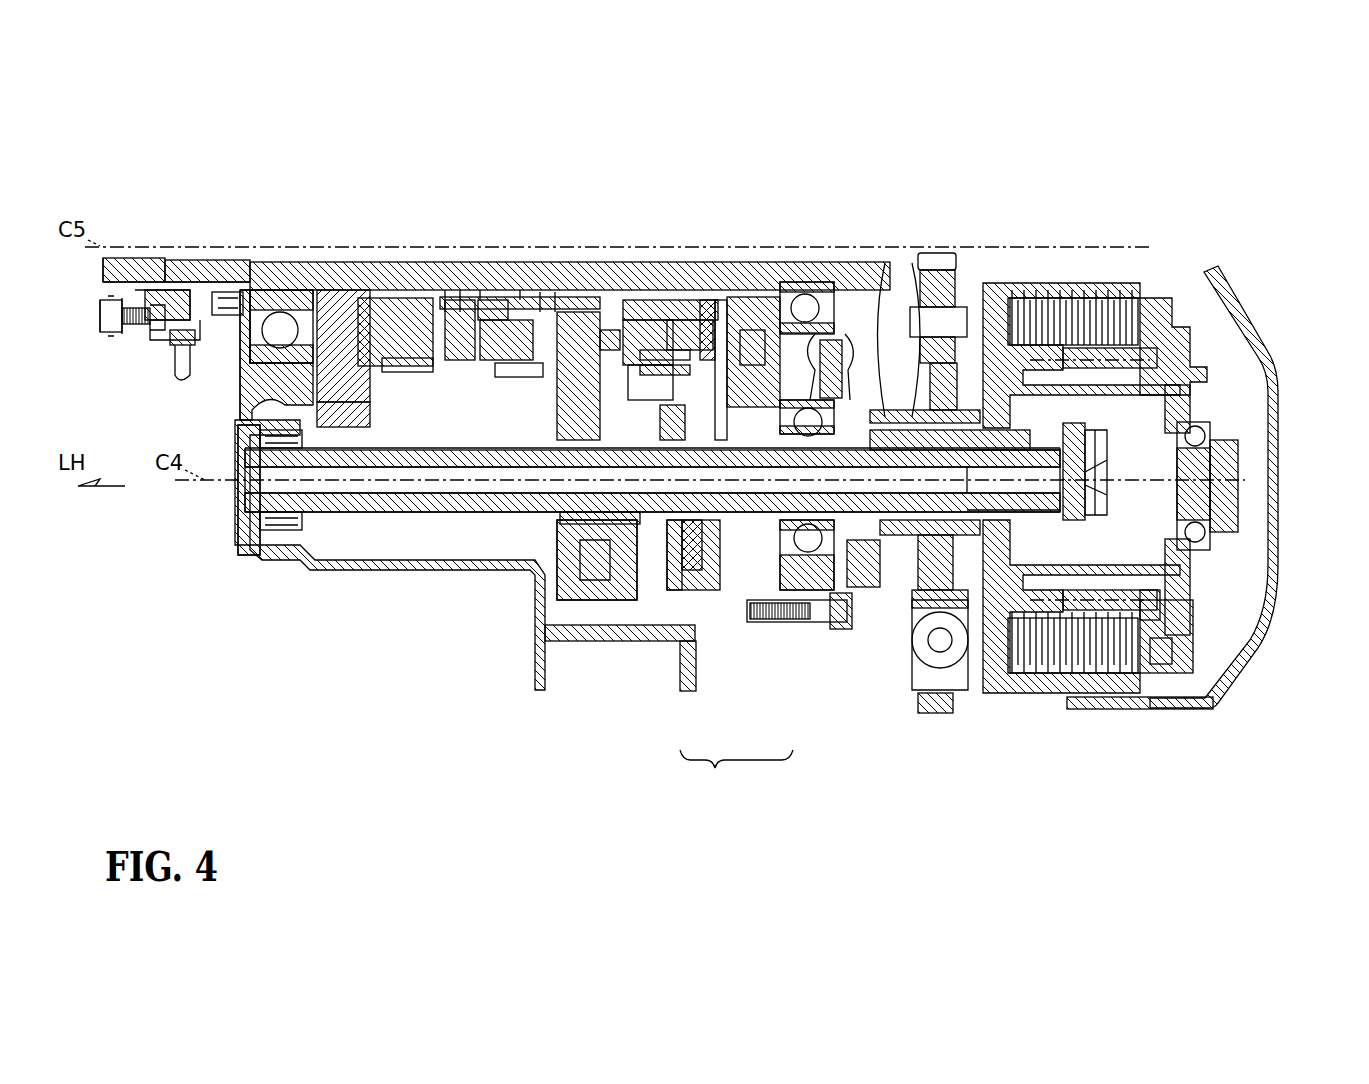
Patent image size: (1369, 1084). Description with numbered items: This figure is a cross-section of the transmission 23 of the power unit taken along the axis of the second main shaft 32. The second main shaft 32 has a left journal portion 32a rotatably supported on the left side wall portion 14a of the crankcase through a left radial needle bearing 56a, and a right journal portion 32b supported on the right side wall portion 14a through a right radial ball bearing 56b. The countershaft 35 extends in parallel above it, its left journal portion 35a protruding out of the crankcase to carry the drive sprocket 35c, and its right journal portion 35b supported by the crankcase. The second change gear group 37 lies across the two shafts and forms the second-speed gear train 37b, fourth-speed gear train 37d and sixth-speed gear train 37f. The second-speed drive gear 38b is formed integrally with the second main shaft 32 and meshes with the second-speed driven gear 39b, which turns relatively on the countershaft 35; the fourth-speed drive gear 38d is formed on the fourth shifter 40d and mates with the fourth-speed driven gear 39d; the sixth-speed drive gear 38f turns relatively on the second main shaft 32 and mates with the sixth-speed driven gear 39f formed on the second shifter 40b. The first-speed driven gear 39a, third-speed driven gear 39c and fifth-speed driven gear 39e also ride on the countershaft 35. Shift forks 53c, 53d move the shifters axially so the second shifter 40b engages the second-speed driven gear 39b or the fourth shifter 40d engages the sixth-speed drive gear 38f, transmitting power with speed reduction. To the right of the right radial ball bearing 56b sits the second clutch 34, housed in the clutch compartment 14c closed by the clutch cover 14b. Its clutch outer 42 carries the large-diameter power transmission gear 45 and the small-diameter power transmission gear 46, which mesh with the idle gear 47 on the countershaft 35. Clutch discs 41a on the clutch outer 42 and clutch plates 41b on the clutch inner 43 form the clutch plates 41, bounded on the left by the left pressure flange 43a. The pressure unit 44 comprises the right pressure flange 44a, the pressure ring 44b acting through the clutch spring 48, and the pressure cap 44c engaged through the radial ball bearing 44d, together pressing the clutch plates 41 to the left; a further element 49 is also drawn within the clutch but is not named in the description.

The side wall portion 14a is at (262, 375).
The clutch cover 14b is at (1260, 300).
The clutch compartment 14c is at (1212, 352).
The transmission 23 is at (928, 210).
The second main shaft 32 is at (384, 534).
The left journal portion 32a is at (258, 505).
The right journal portion 32b is at (843, 625).
The second clutch 34 is at (1198, 303).
The countershaft 35 is at (360, 262).
The left journal portion 35a is at (278, 262).
The right journal portion 35b is at (785, 268).
The drive sprocket 35c is at (150, 335).
The second change gear group 37 is at (622, 618).
The second-speed gear train 37b is at (736, 770).
The fourth-speed gear train 37d is at (440, 260).
The sixth-speed gear train 37f is at (797, 135).
The second-speed drive gear 38b is at (720, 520).
The fourth-speed drive gear 38d is at (510, 247).
The sixth-speed drive gear 38f is at (732, 300).
The first-speed driven gear 39a is at (360, 426).
The second-speed driven gear 39b is at (690, 520).
The third-speed driven gear 39c is at (512, 377).
The fourth-speed driven gear 39d is at (525, 247).
The fifth-speed driven gear 39e is at (410, 370).
The sixth-speed driven gear 39f is at (718, 300).
The second shifter 40b is at (705, 290).
The fourth shifter 40d is at (560, 470).
The clutch plates 41 is at (1147, 185).
The clutch discs 41a is at (1092, 295).
The clutch plates 41b is at (1045, 295).
The clutch outer 42 is at (1098, 710).
The clutch inner 43 is at (1150, 633).
The left pressure flange 43a is at (1008, 665).
The pressure unit 44 is at (1206, 635).
The right pressure flange 44a is at (1150, 610).
The pressure ring 44b is at (1197, 560).
The pressure cap 44c is at (1237, 500).
The radial ball bearing 44d is at (1210, 540).
The large-diameter power transmission gear 45 is at (935, 713).
The small-diameter power transmission gear 46 is at (870, 590).
The idle gear 47 is at (935, 290).
The clutch spring 48 is at (1120, 552).
The clutch spring 49 is at (1112, 375).
The shift fork 53c is at (612, 300).
The shift fork 53d is at (660, 300).
The left radial needle bearing 56a is at (280, 530).
The right radial ball bearing 56b is at (800, 580).